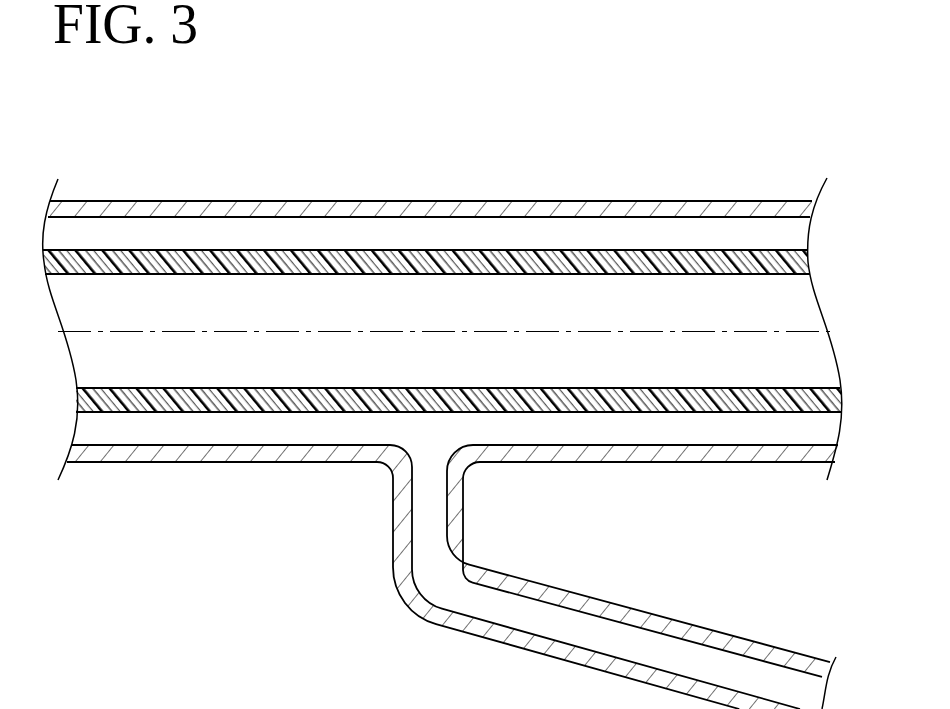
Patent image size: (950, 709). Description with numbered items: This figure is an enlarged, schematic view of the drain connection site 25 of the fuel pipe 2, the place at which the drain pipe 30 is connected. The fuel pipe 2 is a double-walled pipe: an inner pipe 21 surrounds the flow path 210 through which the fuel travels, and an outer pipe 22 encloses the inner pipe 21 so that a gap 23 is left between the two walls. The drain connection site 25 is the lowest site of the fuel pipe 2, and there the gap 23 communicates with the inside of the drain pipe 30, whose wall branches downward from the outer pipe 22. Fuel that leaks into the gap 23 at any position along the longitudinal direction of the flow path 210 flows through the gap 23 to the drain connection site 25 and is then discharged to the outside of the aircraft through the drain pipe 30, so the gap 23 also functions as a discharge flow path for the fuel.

The fuel pipe 2 is at (761, 190).
The inner pipe 21 is at (273, 250).
The outer pipe 22 is at (635, 200).
The gap 23 is at (546, 246).
The drain connection site 25 is at (402, 166).
The drain pipe 30 is at (643, 611).
The flow path 210 is at (468, 317).